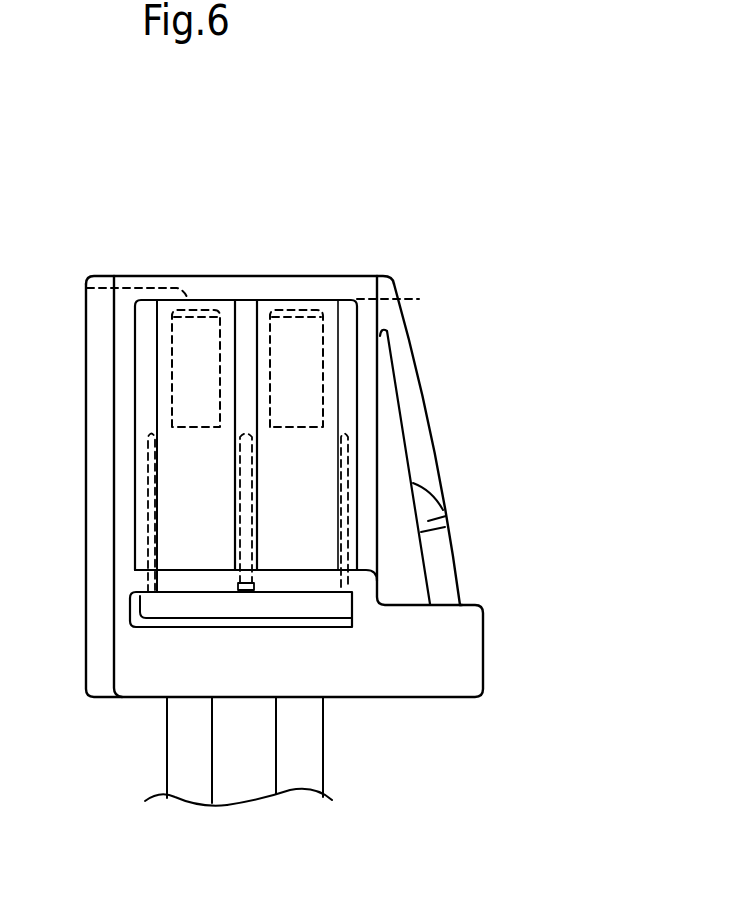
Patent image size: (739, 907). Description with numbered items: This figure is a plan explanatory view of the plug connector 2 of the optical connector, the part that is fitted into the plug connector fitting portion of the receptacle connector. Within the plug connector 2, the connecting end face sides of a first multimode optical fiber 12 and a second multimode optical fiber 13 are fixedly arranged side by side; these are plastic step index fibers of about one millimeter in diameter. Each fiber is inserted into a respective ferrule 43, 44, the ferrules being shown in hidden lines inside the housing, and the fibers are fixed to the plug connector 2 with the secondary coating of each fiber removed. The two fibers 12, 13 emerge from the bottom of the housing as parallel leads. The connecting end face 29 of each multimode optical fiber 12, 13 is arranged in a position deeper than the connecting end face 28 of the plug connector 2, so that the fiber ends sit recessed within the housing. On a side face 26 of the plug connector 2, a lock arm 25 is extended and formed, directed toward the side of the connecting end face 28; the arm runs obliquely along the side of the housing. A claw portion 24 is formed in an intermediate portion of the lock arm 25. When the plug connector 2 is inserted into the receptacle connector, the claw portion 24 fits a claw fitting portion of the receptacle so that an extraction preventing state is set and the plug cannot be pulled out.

The plug connector 2 is at (522, 688).
The first multimode optical fiber 12 is at (186, 763).
The second multimode optical fiber 13 is at (302, 763).
The claw portion 24 is at (443, 513).
The lock arm 25 is at (420, 430).
The side face 26 is at (400, 460).
The connecting end face 28 is at (317, 277).
The connecting end face 29 is at (87, 288).
The ferrule 43 is at (170, 403).
The ferrule 44 is at (312, 392).